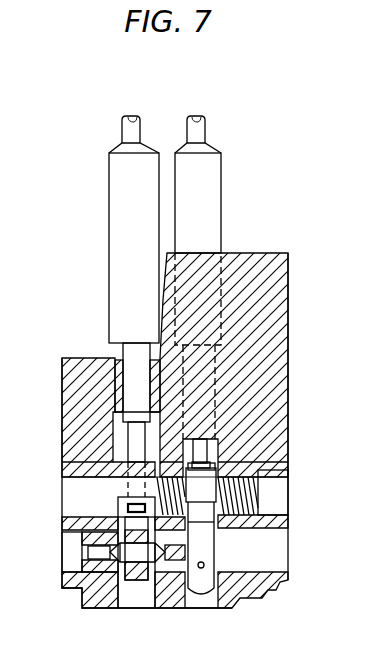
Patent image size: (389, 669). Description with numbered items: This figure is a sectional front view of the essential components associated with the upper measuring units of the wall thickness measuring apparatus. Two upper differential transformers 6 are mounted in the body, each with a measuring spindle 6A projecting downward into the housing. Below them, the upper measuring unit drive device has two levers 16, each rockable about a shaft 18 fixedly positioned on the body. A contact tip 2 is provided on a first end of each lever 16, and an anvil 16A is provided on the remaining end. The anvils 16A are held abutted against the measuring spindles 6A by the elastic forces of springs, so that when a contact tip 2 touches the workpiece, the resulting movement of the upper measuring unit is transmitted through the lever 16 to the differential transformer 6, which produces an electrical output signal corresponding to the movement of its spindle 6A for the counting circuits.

The contact tip 2 is at (210, 582).
The differential transformer 6 is at (108, 218).
The measuring spindle 6A is at (133, 437).
The lever 16 is at (205, 540).
The anvil 16A is at (120, 516).
The shaft 18 is at (218, 492).